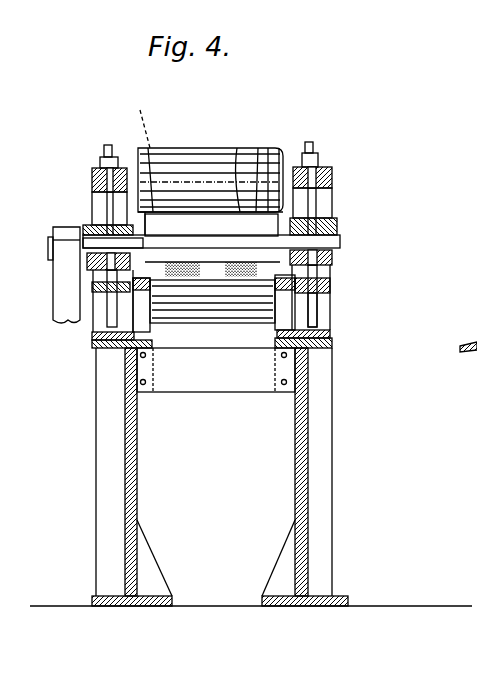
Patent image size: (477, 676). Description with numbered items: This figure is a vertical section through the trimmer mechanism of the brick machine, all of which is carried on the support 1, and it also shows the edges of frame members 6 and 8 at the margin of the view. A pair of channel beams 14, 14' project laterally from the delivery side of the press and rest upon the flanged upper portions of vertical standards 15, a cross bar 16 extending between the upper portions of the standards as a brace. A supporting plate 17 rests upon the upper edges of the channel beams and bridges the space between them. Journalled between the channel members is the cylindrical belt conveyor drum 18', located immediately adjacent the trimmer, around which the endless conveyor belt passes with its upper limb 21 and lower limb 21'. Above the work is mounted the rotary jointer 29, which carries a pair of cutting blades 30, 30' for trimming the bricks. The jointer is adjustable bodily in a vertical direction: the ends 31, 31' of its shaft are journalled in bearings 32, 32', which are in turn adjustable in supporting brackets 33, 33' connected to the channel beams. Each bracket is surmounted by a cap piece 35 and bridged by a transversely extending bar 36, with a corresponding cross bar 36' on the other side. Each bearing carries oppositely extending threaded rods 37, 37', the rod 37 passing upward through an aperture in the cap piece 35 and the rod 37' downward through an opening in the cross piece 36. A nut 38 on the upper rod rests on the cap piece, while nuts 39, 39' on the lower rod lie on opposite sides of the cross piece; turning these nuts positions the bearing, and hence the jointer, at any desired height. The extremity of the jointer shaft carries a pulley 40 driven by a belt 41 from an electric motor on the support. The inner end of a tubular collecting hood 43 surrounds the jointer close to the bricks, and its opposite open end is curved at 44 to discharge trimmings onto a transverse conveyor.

The support 1 is at (408, 606).
The frame member 6 is at (5, 131).
The frame member 8 is at (5, 98).
The channel beam 14 is at (376, 343).
The channel beam 14' is at (85, 358).
The vertical standard 15 is at (105, 382).
The cross bar 16 is at (200, 392).
The supporting plate 17 is at (212, 212).
The belt conveyor drum 18' is at (222, 311).
The upper limb of belt conveyor 21 is at (131, 122).
The lower limb of belt conveyor 21' is at (213, 343).
The rotary jointer 29 is at (278, 148).
The cutting blade 30 is at (267, 154).
The cutting blade 30' is at (248, 142).
The shaft end 31 is at (265, 223).
The shaft end 31' is at (86, 212).
The bearing 32 is at (342, 210).
The bearing 32' is at (89, 190).
The supporting bracket 33 is at (349, 308).
The supporting bracket 33' is at (82, 337).
The cap piece 35 is at (330, 170).
The transversely extending bar 36 is at (358, 292).
The bolt 36' is at (118, 292).
The rod 37 is at (346, 197).
The rod 37' is at (368, 321).
The nut 38 is at (320, 157).
The nut 39 is at (348, 249).
The nut 39' is at (363, 302).
The pulley 40 is at (53, 232).
The belt 41 is at (68, 290).
The tubular collecting hood 43 is at (290, 148).
The curved end of hood 44 is at (178, 148).